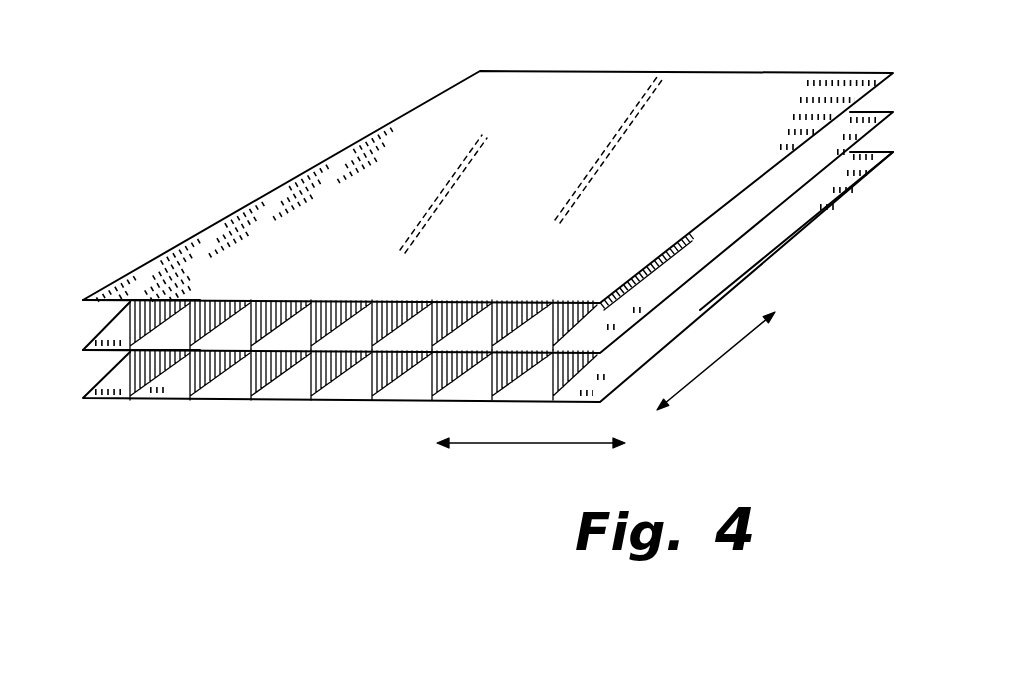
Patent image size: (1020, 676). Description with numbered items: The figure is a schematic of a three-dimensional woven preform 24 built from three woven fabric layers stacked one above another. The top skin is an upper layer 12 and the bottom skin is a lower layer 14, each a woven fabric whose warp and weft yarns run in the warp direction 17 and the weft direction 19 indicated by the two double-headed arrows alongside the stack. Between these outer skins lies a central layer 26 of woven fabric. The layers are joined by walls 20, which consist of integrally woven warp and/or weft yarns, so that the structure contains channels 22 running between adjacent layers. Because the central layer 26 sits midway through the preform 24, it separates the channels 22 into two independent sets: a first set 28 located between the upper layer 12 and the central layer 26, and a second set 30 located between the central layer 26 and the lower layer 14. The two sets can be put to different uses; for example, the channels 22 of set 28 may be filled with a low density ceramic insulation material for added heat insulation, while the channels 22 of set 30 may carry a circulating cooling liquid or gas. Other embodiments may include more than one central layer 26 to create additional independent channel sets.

The upper layer 12 is at (155, 258).
The lower layer 14 is at (207, 400).
The warp direction 17 is at (728, 358).
The weft direction 19 is at (516, 443).
The walls 20 is at (103, 400).
The channels 22 is at (362, 366).
The woven preform 24 is at (817, 275).
The central layer 26 is at (92, 356).
The first set of channels 28 is at (77, 306).
The second set of channels 30 is at (77, 355).